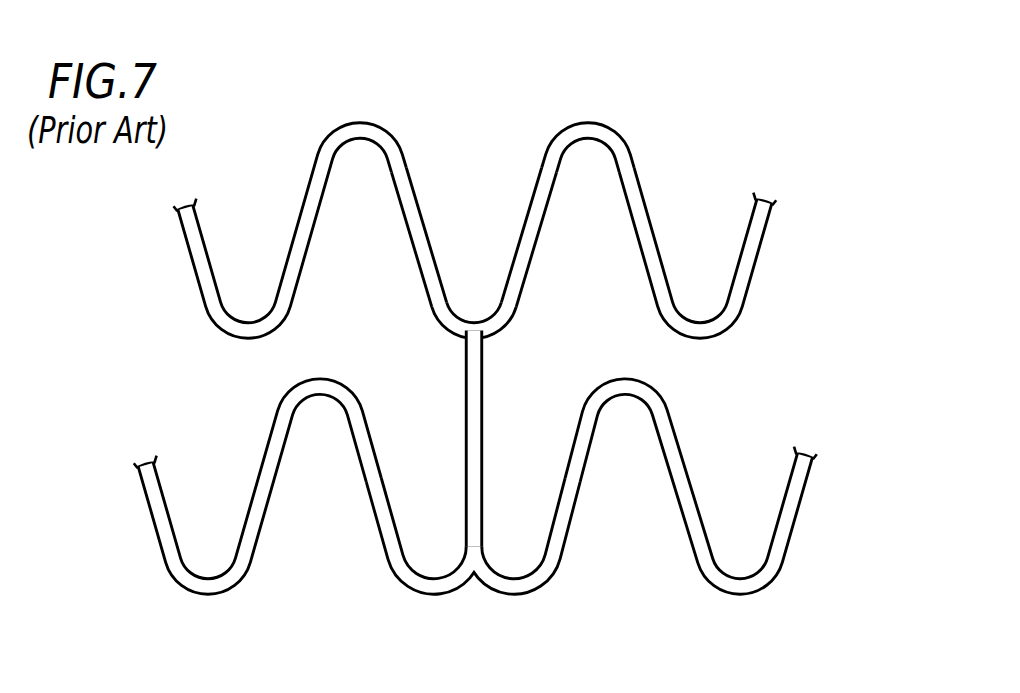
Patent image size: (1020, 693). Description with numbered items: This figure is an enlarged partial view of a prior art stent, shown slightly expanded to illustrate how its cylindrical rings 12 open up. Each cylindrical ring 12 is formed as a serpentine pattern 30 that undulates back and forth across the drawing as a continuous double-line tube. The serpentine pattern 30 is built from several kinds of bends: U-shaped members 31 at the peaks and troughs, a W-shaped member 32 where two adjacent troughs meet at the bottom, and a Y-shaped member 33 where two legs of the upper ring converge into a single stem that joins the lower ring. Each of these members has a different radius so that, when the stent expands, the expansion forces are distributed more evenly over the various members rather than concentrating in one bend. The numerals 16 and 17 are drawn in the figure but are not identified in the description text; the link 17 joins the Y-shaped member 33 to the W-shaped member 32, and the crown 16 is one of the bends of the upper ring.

The cylindrical ring 12 is at (520, 464).
The serpentine pattern 30 is at (537, 211).
The U-shaped member 31 is at (527, 210).
The crown 16 is at (588, 123).
The connector link 17 is at (477, 316).
The Y-shaped member 33 is at (481, 345).
The W-shaped member 32 is at (433, 595).